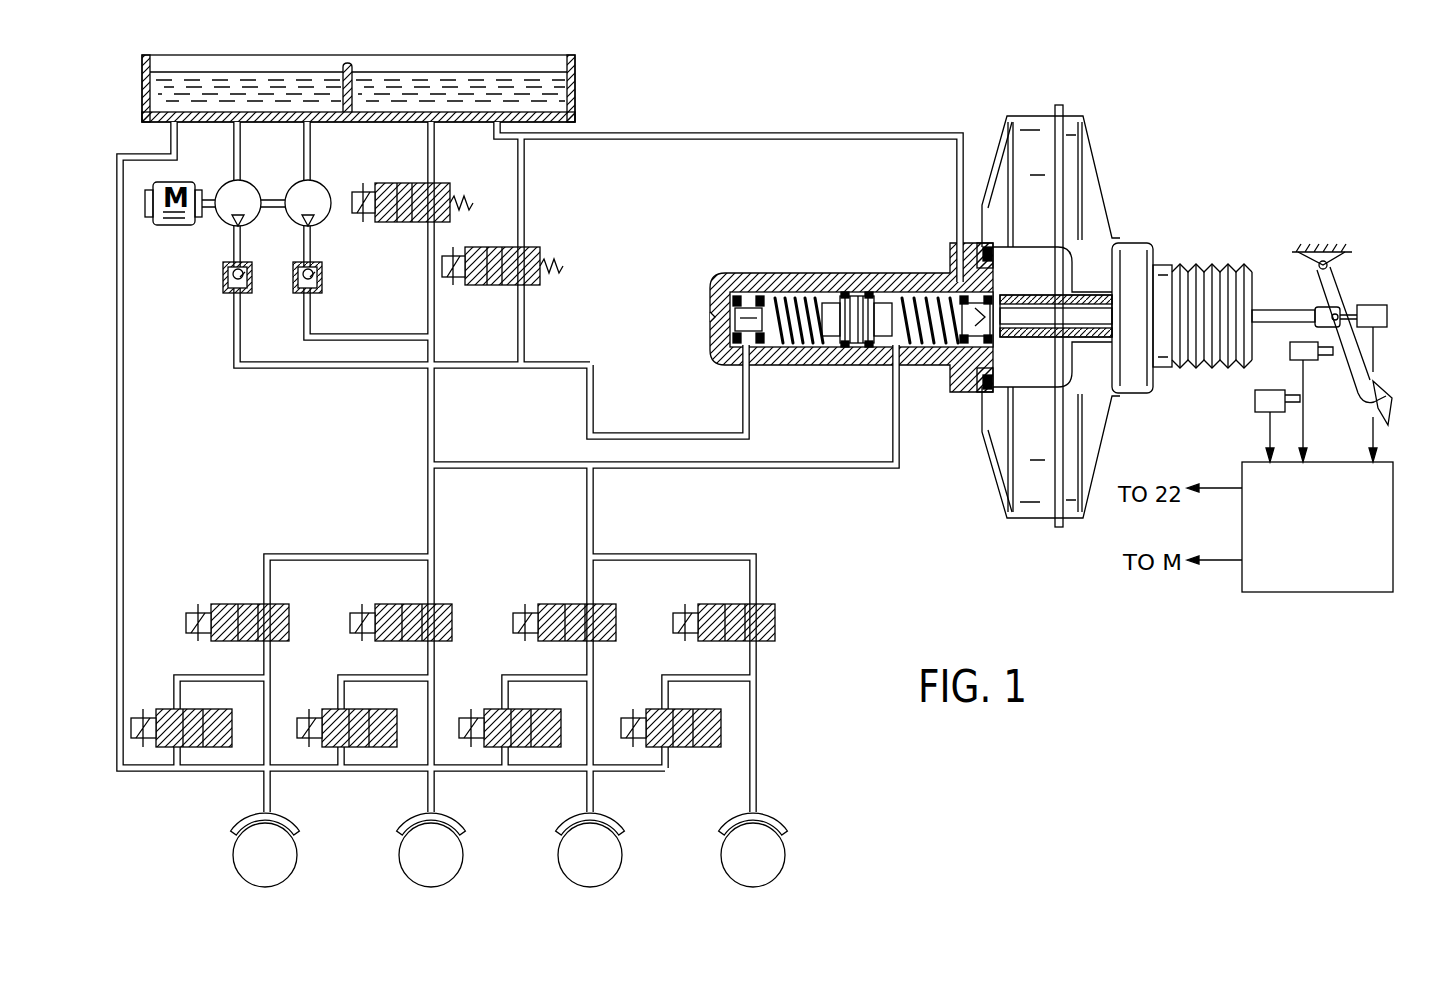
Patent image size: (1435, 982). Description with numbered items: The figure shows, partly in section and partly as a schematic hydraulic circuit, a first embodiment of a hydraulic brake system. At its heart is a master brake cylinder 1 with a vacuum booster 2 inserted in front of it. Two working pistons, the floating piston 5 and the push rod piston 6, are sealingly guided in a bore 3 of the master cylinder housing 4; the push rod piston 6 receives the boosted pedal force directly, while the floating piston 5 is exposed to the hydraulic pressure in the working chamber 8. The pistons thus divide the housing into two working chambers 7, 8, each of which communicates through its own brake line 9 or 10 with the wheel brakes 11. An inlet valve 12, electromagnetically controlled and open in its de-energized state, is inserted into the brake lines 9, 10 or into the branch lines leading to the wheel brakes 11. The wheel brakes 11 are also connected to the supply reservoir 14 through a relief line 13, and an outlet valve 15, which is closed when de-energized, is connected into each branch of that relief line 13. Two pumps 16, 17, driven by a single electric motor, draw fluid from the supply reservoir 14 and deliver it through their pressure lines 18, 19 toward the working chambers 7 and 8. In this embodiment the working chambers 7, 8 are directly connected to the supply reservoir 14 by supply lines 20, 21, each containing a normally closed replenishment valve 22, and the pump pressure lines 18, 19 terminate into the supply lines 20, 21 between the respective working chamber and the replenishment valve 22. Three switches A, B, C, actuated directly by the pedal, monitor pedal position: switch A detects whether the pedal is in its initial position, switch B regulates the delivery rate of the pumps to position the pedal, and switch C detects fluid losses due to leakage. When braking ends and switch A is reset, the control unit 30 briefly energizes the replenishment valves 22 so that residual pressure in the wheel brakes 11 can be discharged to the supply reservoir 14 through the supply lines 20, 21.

The master brake cylinder 1 is at (738, 372).
The vacuum booster 2 is at (1106, 191).
The bore 3 is at (773, 292).
The master cylinder housing 4 is at (713, 287).
The floating piston 5 is at (847, 345).
The push rod piston 6 is at (978, 340).
The working chamber 7 is at (784, 344).
The working chamber 8 is at (917, 344).
The brake line 9 is at (435, 490).
The brake line 10 is at (596, 494).
The wheel brakes 11 is at (298, 850).
The inlet valve 12 is at (286, 606).
The relief line 13 is at (125, 416).
The supply reservoir 14 is at (577, 96).
The outlet valve 15 is at (166, 709).
The pump 16 is at (243, 191).
The pump 17 is at (314, 191).
The pressure line 18 is at (233, 331).
The pressure line 19 is at (303, 338).
The supply line 20 is at (436, 136).
The supply line 21 is at (497, 141).
The replenishment valve 22 is at (418, 185).
The control unit 30 is at (1322, 593).
The switch A is at (1373, 305).
The switch B is at (1303, 342).
The switch C is at (1272, 390).